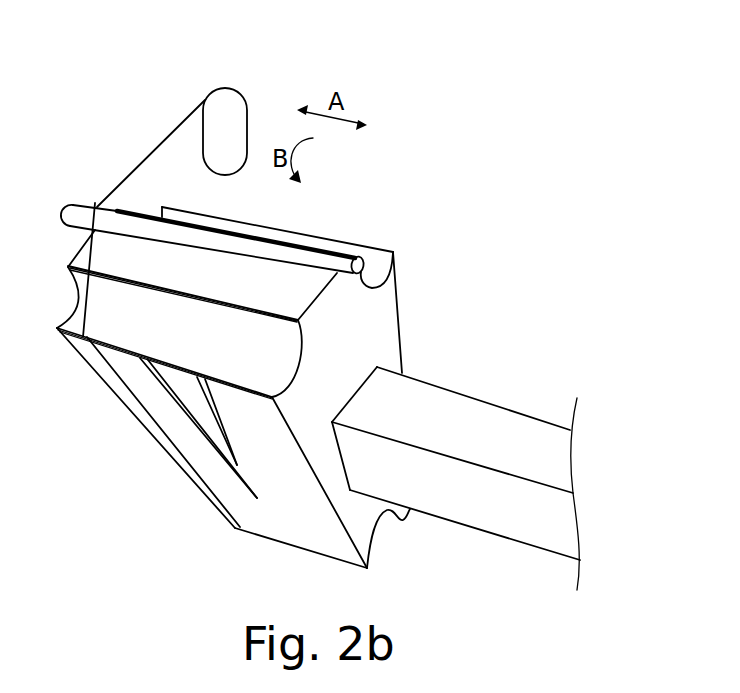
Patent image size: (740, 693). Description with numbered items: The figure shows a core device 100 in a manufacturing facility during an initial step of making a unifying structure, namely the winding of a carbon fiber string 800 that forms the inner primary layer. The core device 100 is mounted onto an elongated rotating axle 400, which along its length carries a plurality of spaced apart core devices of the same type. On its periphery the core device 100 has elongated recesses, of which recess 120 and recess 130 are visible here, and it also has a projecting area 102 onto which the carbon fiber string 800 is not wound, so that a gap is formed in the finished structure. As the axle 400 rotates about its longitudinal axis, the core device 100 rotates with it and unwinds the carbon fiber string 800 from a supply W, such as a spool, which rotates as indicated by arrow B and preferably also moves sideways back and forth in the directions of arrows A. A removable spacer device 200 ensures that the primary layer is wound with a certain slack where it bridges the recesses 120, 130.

The supply W is at (228, 100).
The carbon fiber string 800 is at (158, 145).
The removable spacer device 200 is at (85, 203).
The elongated recess 120 is at (373, 258).
The core device 100 is at (418, 362).
The elongated recess 130 is at (280, 352).
The projecting area 102 is at (203, 415).
The elongated rotating axle 400 is at (535, 435).